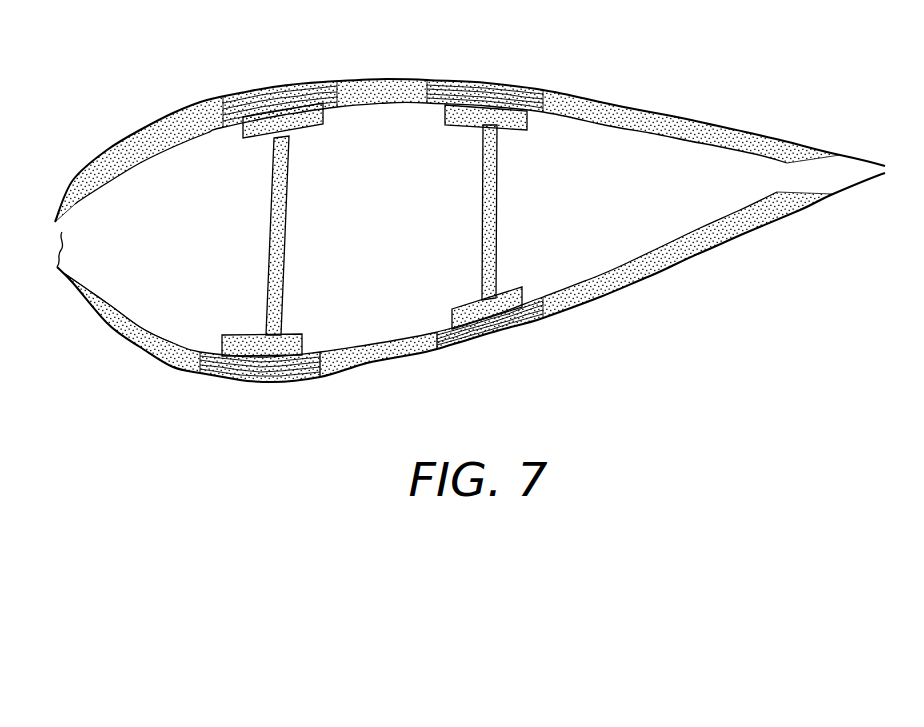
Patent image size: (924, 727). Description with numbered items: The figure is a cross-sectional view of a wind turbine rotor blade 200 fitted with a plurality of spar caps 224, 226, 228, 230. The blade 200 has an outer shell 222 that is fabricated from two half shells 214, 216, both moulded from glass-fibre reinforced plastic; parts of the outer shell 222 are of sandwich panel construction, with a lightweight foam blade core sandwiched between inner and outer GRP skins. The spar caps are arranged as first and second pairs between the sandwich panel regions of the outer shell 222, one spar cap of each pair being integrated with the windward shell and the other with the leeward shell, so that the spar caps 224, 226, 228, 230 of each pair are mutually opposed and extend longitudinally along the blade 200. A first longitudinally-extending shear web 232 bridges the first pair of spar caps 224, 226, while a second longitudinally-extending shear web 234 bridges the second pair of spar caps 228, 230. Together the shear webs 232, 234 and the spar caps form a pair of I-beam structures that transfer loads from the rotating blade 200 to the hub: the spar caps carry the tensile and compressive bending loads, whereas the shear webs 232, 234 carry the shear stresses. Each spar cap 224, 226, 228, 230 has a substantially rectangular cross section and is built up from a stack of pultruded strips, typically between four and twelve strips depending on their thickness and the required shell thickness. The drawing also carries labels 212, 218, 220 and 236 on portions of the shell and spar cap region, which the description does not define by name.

The wind turbine rotor blade 200 is at (107, 108).
The suction side shell 212 is at (702, 115).
The half shell 214 is at (792, 135).
The half shell 216 is at (652, 278).
The shell section 218 is at (390, 353).
The leading edge 220 is at (132, 312).
The outer shell 222 is at (130, 347).
The spar cap 224 is at (263, 373).
The spar cap 226 is at (277, 93).
The spar cap 228 is at (500, 330).
The spar cap 230 is at (507, 82).
The first shear web 232 is at (285, 233).
The second shear web 234 is at (478, 200).
The spar cap laminate 236 is at (462, 80).